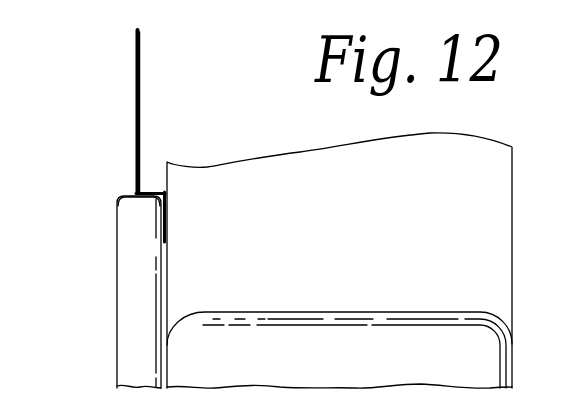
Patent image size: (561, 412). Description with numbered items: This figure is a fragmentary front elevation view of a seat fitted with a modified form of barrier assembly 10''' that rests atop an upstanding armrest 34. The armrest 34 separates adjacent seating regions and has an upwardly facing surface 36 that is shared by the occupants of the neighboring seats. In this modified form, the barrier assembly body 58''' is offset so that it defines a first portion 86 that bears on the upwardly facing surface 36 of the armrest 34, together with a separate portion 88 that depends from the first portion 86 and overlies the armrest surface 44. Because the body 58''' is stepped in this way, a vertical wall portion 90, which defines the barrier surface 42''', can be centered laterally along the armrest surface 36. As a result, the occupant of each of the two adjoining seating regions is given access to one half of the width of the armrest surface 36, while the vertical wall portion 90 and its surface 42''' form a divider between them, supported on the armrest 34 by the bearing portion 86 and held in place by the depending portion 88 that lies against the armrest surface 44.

The barrier assembly 10''' is at (205, 128).
The armrest 34 is at (133, 272).
The upwardly facing surface 36 is at (125, 194).
The surface 42''' is at (180, 103).
The armrest surface 44 is at (158, 284).
The barrier assembly body 58''' is at (204, 180).
The first portion 86 is at (148, 193).
The separate portion 88 is at (167, 218).
The vertical wall portion 90 is at (139, 72).